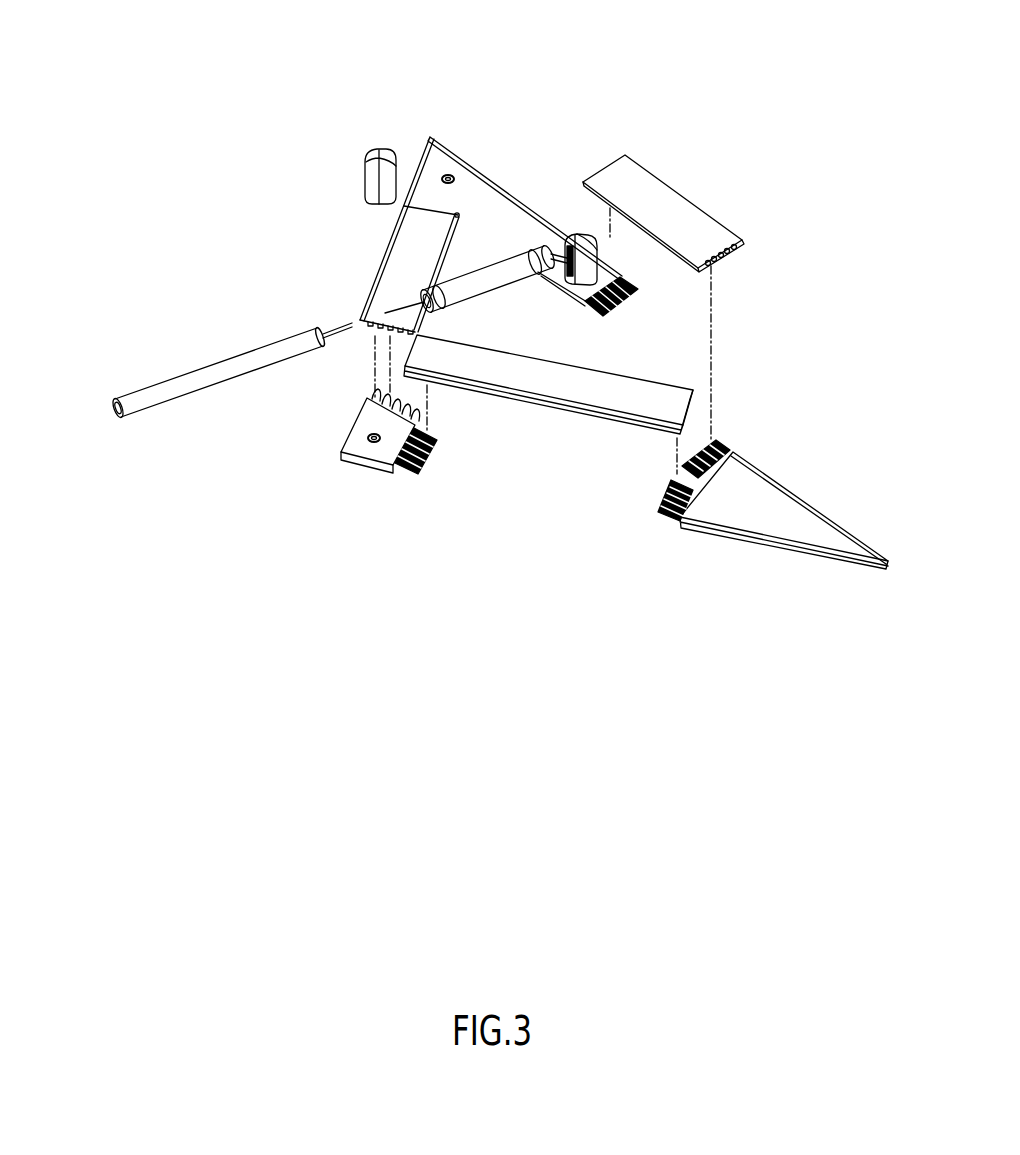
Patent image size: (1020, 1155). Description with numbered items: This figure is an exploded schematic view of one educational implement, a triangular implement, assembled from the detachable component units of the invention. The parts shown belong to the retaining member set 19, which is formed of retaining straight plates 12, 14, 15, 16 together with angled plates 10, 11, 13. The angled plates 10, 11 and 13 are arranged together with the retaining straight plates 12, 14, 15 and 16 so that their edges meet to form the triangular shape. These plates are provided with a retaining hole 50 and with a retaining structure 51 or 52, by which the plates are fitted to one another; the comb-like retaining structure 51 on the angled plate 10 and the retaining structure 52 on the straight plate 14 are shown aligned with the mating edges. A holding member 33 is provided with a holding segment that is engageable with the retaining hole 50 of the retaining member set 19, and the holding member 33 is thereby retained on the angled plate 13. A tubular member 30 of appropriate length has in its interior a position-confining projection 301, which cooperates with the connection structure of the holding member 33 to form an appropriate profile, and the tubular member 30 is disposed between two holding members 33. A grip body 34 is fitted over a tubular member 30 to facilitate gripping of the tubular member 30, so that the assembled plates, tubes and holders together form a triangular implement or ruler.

The angled plate 10 is at (387, 450).
The angled plate 11 is at (740, 508).
The retaining straight plate 12 is at (535, 381).
The angled plate 13 is at (441, 157).
The retaining straight plate 14 is at (678, 218).
The retaining straight plate 15 is at (560, 293).
The retaining straight plate 16 is at (509, 215).
The retaining member set 19 is at (591, 458).
The tubular member 30 is at (157, 393).
The position-confining projection 301 is at (116, 411).
The holding member 33 is at (370, 157).
The grip body 34 is at (487, 282).
The retaining hole 50 is at (444, 175).
The retaining structure 51 is at (434, 448).
The retaining structure 52 is at (727, 266).